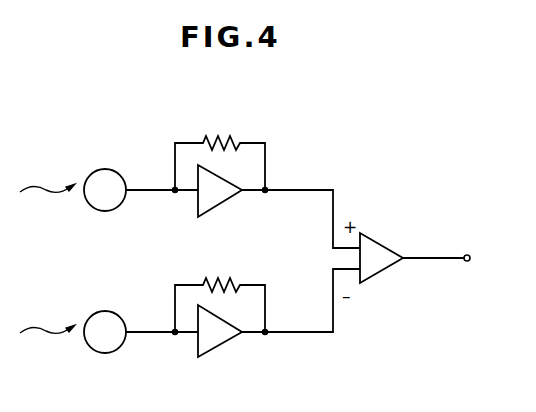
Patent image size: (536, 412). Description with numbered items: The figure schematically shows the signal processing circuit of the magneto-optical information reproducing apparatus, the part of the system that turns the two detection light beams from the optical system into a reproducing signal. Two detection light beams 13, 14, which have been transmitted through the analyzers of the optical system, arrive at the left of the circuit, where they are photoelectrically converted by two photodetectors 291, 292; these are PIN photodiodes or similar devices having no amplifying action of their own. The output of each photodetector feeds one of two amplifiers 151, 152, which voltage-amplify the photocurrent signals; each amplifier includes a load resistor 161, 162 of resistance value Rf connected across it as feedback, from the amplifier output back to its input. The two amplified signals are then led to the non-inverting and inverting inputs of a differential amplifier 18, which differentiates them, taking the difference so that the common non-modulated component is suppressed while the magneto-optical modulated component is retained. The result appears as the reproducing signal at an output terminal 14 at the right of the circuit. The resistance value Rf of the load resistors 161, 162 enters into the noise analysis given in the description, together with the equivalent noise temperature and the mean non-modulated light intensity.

The detection light beam 13 is at (53, 186).
The detection light beam / terminal 14 is at (467, 263).
The photodetector 291 is at (121, 206).
The photodetector 292 is at (121, 348).
The amplifier 151 is at (227, 198).
The amplifier 152 is at (231, 338).
The load resistor 161 is at (231, 135).
The load resistor 162 is at (203, 283).
The differential amplifier 18 is at (385, 242).